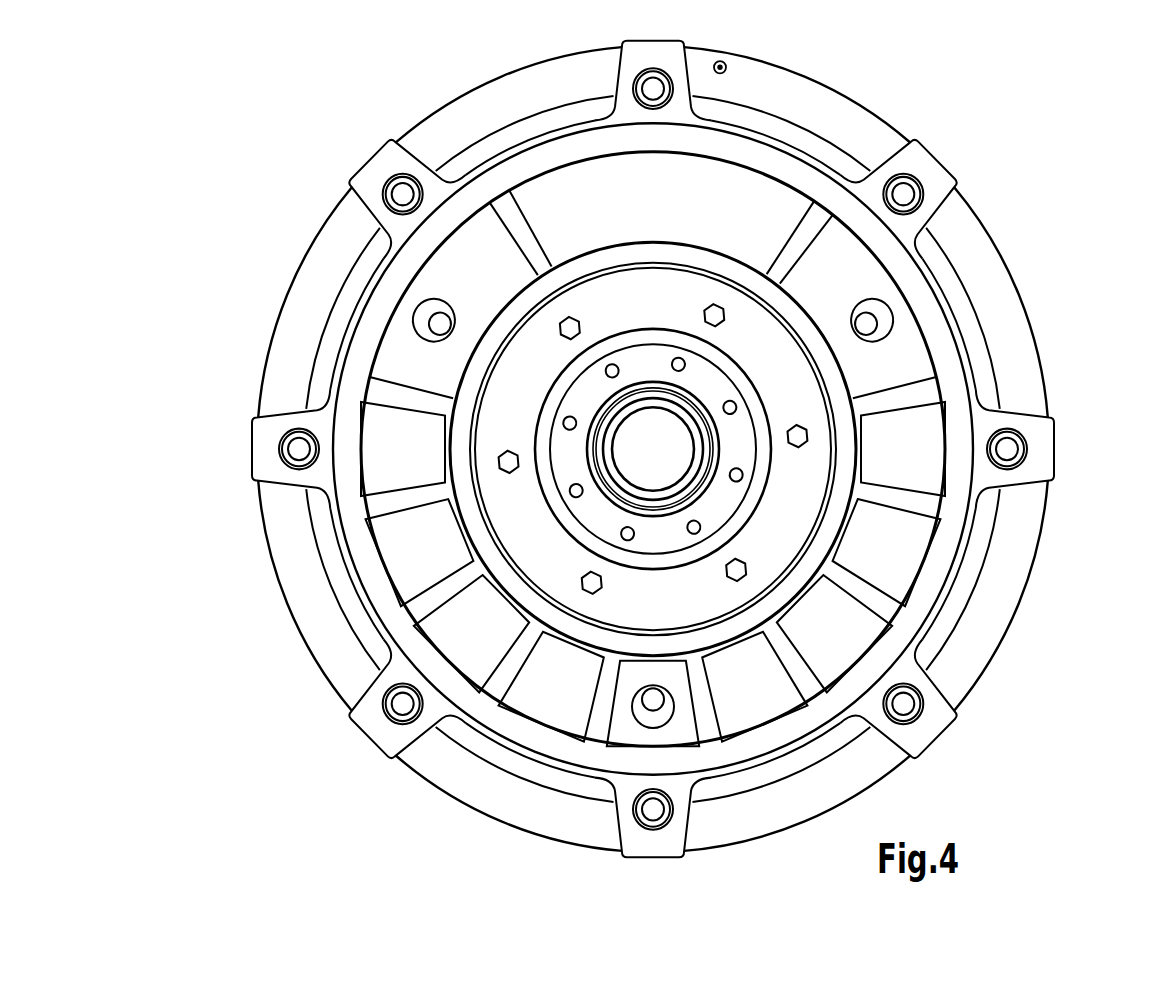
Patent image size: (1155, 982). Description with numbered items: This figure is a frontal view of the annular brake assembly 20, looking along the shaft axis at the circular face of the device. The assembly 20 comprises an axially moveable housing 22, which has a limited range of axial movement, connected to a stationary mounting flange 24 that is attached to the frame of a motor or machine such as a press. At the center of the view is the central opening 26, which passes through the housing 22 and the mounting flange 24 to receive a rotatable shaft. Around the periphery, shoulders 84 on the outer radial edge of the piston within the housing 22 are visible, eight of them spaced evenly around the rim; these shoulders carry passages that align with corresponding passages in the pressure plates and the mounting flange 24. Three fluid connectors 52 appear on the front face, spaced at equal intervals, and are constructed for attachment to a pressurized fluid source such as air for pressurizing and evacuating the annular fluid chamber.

The annular brake assembly 20 is at (1010, 203).
The housing 22 is at (468, 156).
The mounting flange 24 is at (841, 92).
The central opening 26 is at (648, 448).
The fluid connectors 52 is at (413, 312).
The shoulders 84 is at (660, 50).